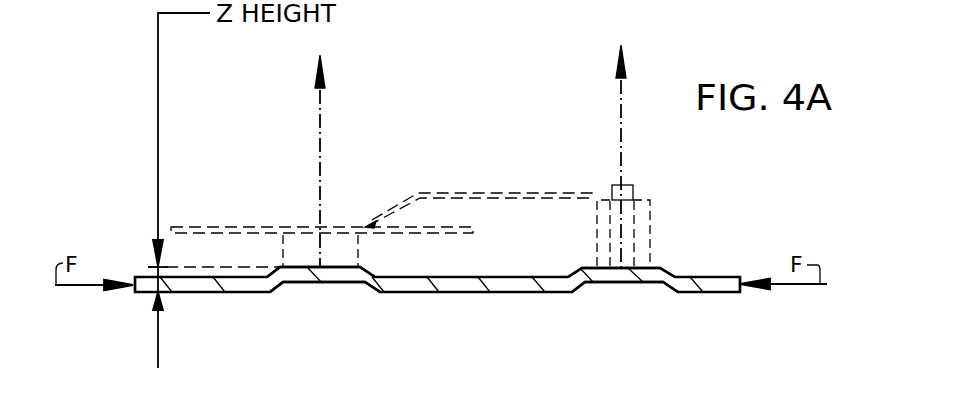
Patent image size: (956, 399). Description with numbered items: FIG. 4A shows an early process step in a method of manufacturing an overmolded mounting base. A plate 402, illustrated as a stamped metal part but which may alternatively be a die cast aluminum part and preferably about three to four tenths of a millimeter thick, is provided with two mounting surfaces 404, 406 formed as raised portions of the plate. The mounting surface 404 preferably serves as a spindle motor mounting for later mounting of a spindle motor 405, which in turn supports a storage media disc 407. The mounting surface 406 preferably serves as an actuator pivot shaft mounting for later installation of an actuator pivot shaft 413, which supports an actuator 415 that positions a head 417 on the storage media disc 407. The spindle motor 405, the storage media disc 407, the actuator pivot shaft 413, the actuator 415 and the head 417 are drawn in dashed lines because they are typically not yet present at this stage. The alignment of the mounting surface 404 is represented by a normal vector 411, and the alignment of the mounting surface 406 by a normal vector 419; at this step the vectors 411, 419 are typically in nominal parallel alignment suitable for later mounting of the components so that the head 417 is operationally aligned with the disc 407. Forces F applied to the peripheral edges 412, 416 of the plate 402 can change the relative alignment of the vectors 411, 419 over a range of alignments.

The plate 402 is at (480, 283).
The mounting surface 404 is at (330, 285).
The spindle motor 405 is at (360, 258).
The mounting surface 406 is at (607, 268).
The storage media disc 407 is at (200, 225).
The normal vector 411 is at (320, 97).
The peripheral edge 412 is at (133, 288).
The actuator pivot shaft 413 is at (633, 186).
The actuator 415 is at (597, 238).
The peripheral edge 416 is at (727, 292).
The head 417 is at (367, 224).
The normal vector 419 is at (620, 80).